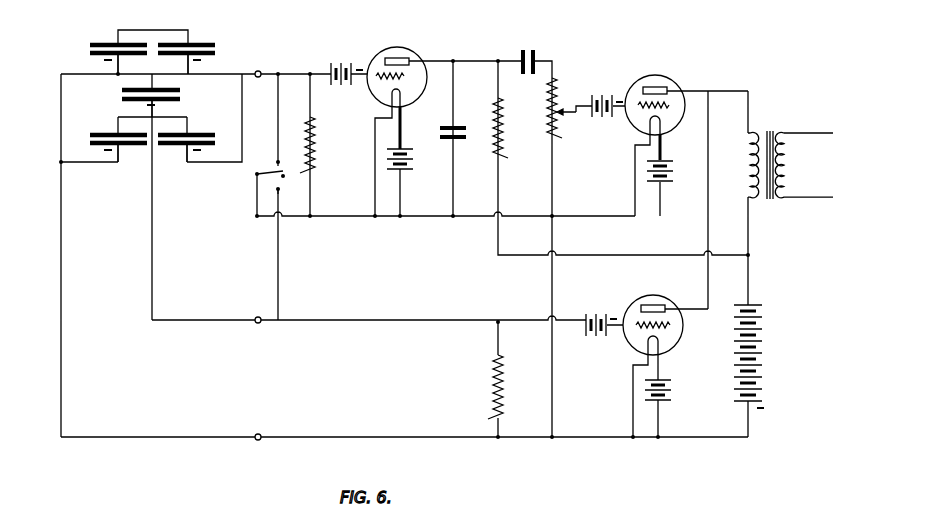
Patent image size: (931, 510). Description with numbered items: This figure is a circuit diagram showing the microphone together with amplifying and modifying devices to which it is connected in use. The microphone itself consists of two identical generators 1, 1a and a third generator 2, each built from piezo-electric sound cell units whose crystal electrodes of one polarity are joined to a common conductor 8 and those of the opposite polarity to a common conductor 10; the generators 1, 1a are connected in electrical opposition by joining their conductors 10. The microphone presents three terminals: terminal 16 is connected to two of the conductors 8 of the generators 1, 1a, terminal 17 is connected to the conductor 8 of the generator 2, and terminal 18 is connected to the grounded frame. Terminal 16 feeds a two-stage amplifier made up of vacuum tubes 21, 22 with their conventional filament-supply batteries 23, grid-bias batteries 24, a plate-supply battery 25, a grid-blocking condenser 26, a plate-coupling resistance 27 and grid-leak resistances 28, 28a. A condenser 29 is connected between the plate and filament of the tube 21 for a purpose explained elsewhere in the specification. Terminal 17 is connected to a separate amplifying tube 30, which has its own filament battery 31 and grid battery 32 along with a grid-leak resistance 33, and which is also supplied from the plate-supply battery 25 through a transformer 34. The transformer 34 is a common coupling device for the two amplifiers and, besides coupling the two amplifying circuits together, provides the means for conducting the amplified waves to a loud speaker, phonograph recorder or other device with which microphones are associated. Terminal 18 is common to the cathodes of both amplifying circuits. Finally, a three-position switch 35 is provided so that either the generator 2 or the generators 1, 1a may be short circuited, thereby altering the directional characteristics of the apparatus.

The generator 1 is at (86, 40).
The generator 1a is at (90, 132).
The third generator 2 is at (119, 93).
The common conductor 8 is at (104, 71).
The common conductor 10 is at (154, 31).
The terminal 16 is at (259, 70).
The terminal 17 is at (258, 324).
The terminal 18 is at (258, 441).
The vacuum tube 21 is at (404, 52).
The vacuum tube 22 is at (676, 80).
The filament-supply battery 23 is at (408, 173).
The grid-bias battery 24 is at (342, 63).
The plate-supply battery 25 is at (764, 349).
The grid-blocking condenser 26 is at (530, 52).
The plate-coupling resistance 27 is at (504, 150).
The grid-leak resistance 28 is at (316, 142).
The grid-leak resistance 28a is at (564, 94).
The condenser 29 is at (465, 124).
The amplifying tube 30 is at (666, 298).
The filament battery 31 is at (674, 400).
The grid battery 32 is at (589, 336).
The grid-leak resistance 33 is at (490, 384).
The transformer 34 is at (772, 132).
The three-position switch 35 is at (261, 174).